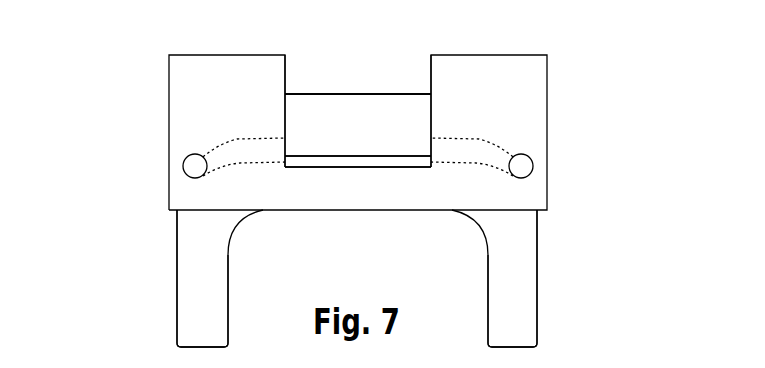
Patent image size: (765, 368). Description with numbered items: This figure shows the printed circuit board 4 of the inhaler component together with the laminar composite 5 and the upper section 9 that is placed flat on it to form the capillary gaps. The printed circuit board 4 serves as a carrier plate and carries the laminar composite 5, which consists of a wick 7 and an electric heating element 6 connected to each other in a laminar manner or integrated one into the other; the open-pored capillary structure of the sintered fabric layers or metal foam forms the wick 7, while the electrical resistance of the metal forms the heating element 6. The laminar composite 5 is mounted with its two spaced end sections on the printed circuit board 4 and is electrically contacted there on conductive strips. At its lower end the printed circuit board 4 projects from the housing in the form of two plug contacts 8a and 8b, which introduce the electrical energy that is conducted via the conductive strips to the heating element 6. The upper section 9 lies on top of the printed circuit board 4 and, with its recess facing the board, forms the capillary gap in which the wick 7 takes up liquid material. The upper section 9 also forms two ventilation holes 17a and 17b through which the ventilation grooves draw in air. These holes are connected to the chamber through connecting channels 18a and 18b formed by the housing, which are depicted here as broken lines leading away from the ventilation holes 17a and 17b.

The printed circuit board 4 is at (205, 223).
The laminar composite 5 is at (360, 122).
The electric heating element 6 is at (360, 122).
The wick 7 is at (360, 122).
The plug contact 8a is at (512, 330).
The plug contact 8b is at (198, 330).
The upper section 9 is at (205, 97).
The ventilation hole 17a is at (521, 166).
The ventilation hole 17b is at (195, 166).
The connecting channel 18a is at (470, 148).
The connecting channel 18b is at (240, 150).